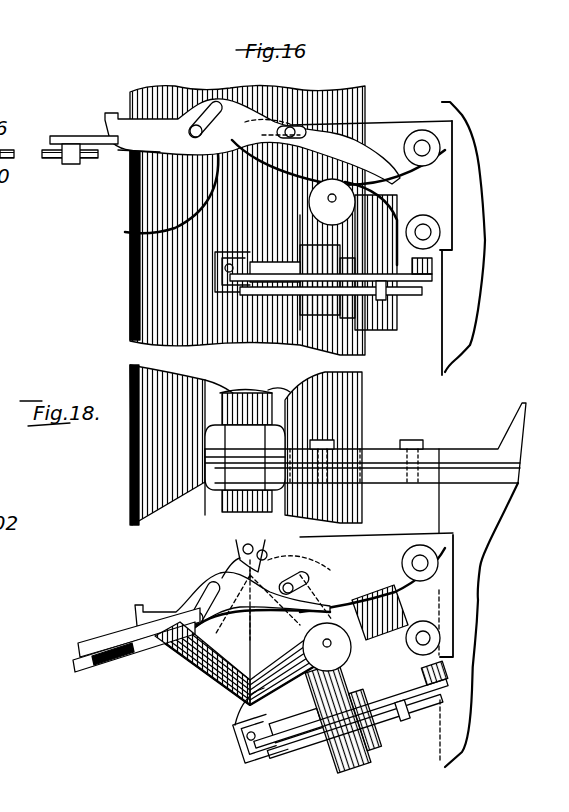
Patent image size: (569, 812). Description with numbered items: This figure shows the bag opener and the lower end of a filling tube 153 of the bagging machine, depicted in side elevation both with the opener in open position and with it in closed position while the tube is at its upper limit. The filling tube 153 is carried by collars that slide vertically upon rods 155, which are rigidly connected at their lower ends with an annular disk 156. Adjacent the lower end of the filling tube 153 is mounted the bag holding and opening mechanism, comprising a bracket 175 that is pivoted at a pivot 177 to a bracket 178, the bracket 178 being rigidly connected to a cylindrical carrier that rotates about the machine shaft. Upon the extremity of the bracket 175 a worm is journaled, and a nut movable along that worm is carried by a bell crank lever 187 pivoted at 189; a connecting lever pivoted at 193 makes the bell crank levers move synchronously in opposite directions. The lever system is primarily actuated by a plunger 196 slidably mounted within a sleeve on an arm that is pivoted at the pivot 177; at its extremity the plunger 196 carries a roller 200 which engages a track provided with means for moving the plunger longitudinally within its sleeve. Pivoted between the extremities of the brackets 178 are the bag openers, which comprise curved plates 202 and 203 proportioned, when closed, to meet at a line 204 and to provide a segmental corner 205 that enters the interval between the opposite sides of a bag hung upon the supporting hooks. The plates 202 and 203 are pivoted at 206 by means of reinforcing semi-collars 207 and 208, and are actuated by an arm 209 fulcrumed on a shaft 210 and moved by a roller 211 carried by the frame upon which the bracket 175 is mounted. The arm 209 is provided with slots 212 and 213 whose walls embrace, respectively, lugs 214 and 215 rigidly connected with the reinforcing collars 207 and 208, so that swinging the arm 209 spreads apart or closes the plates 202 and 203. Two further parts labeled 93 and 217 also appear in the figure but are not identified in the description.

In FIG. 18, the guide bracket 93 is at (412, 712).
In FIG. 16, the filling tube 153 is at (247, 221).
In FIG. 18, the filling tube 153 is at (246, 445).
In FIG. 18, the rod 155 is at (250, 395).
In FIG. 18, the annular disk 156 is at (258, 465).
In FIG. 16, the bracket 175 is at (285, 283).
In FIG. 18, the bracket 175 is at (305, 738).
In FIG. 16, the pivot 177 is at (432, 232).
In FIG. 18, the pivot 177 is at (432, 638).
In FIG. 16, the bracket 178 is at (446, 183).
In FIG. 18, the bracket 178 is at (433, 592).
In FIG. 16, the bell crank lever 187 is at (250, 290).
In FIG. 18, the bell crank lever 187 is at (275, 760).
In FIG. 16, the pivot 189 is at (325, 316).
In FIG. 18, the pivot 189 is at (352, 742).
In FIG. 16, the pivot 193 is at (384, 295).
In FIG. 16, the plunger 196 is at (84, 127).
In FIG. 18, the plunger 196 is at (108, 635).
In FIG. 16, the roller 200 is at (52, 158).
In FIG. 18, the roller 200 is at (100, 657).
In FIG. 16, the curved plate 202 is at (171, 192).
In FIG. 18, the curved plate 202 is at (202, 637).
In FIG. 16, the curved plate 203 is at (298, 197).
In FIG. 18, the curved plate 203 is at (329, 645).
In FIG. 18, the line 204 is at (236, 680).
In FIG. 18, the segmental corner 205 is at (238, 716).
In FIG. 18, the pivot 206 is at (244, 552).
In FIG. 16, the reinforcing semi-collar 207 is at (140, 152).
In FIG. 18, the reinforcing semi-collar 208 is at (305, 608).
In FIG. 16, the arm 209 is at (376, 140).
In FIG. 18, the arm 209 is at (326, 560).
In FIG. 16, the shaft 210 is at (430, 148).
In FIG. 18, the shaft 210 is at (430, 560).
In FIG. 16, the roller 211 is at (332, 202).
In FIG. 18, the roller 211 is at (327, 647).
In FIG. 16, the slot 212 is at (292, 126).
In FIG. 18, the slot 212 is at (292, 572).
In FIG. 16, the slot 213 is at (206, 105).
In FIG. 18, the slot 213 is at (190, 636).
In FIG. 16, the lug 214 is at (196, 142).
In FIG. 18, the lug 214 is at (205, 590).
In FIG. 16, the lug 215 is at (302, 134).
In FIG. 18, the lug 215 is at (262, 550).
In FIG. 18, the arm 217 is at (240, 570).